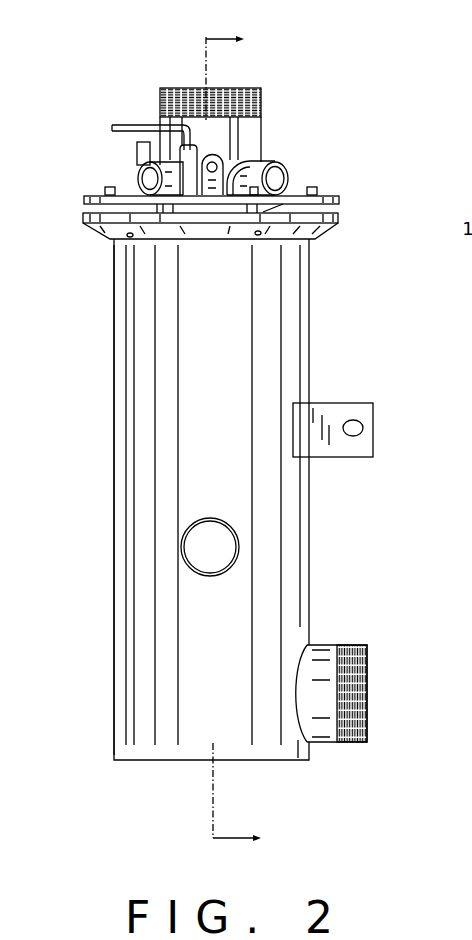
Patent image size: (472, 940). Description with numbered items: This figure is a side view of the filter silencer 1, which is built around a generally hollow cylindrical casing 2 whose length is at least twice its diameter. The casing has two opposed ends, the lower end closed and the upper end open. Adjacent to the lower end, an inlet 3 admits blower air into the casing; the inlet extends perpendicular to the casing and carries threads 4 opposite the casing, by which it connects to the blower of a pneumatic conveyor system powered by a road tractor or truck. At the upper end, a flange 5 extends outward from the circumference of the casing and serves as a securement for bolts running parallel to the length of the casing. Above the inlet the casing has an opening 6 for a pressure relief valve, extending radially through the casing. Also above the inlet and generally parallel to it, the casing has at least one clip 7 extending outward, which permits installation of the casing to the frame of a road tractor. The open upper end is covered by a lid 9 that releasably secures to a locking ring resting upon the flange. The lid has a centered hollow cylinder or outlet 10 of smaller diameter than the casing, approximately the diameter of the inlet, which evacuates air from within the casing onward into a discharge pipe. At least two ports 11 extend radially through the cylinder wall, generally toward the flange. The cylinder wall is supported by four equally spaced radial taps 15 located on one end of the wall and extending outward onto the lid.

The filter silencer 1 is at (90, 276).
The casing 2 is at (113, 430).
The inlet 3 is at (367, 693).
The threads 4 is at (367, 742).
The flange 5 is at (328, 230).
The opening 6 is at (203, 545).
The clip 7 is at (333, 413).
The lid 9 is at (255, 117).
The outlet 10 is at (238, 138).
The ports 11 is at (221, 158).
The radial taps 15 is at (272, 182).